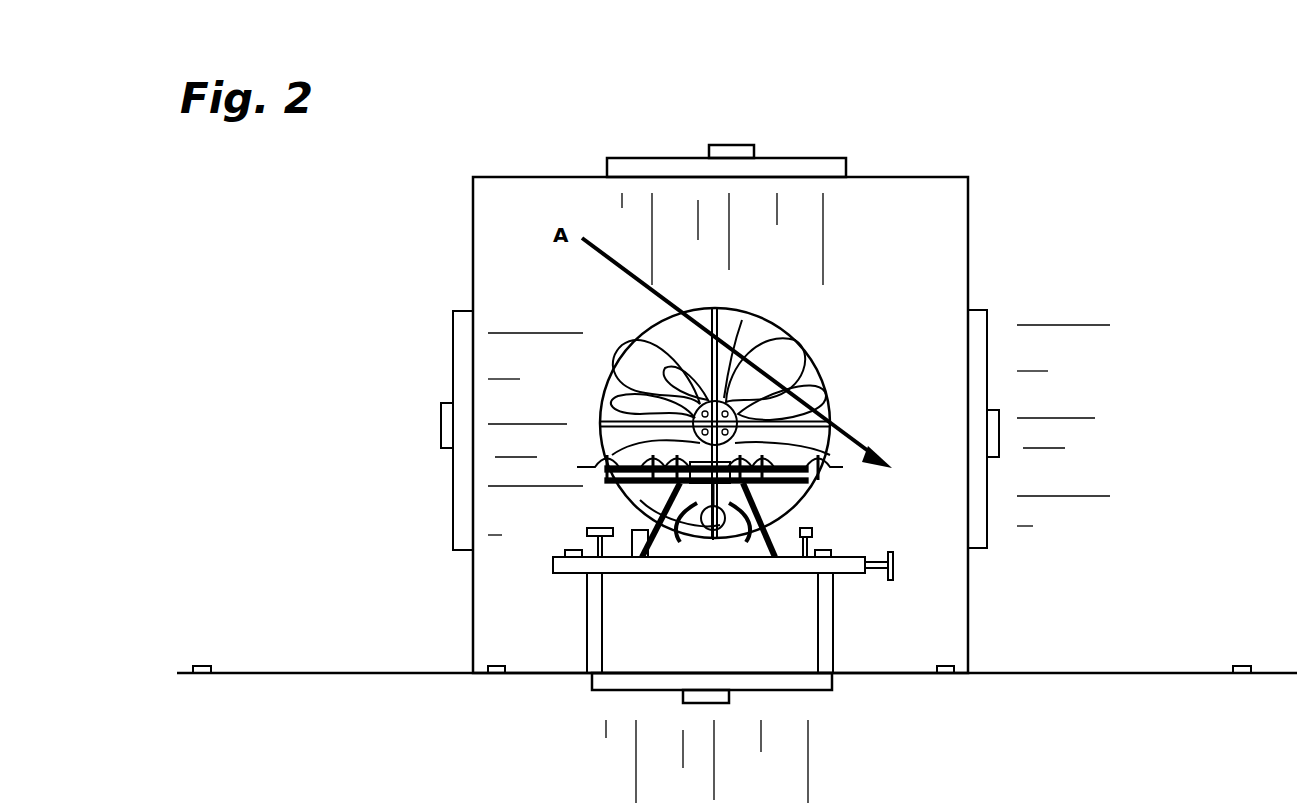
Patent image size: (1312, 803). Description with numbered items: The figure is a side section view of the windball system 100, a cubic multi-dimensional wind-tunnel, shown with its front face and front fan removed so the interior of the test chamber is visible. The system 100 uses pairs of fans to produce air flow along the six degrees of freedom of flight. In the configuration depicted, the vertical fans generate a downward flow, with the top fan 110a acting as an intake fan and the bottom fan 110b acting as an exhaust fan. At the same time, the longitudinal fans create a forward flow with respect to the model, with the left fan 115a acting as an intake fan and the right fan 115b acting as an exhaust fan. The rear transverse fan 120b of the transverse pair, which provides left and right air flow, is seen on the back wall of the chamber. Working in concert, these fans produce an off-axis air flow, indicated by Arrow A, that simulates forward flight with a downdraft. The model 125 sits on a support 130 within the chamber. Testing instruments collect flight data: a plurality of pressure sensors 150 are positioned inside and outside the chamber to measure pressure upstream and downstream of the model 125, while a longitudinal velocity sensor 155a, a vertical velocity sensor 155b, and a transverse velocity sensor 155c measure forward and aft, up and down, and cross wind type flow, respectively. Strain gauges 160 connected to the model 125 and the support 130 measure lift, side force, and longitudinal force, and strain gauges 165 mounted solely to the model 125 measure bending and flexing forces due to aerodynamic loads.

The system 100 is at (486, 136).
The top fan 110a is at (792, 157).
The bottom fan 110b is at (822, 690).
The left fan 115a is at (465, 311).
The right fan 115b is at (980, 310).
The transverse fan 120b is at (643, 347).
The model 125 is at (840, 428).
The support 130 is at (848, 557).
The pressure sensors 150 is at (577, 550).
The longitudinal velocity sensor 155a is at (600, 528).
The vertical velocity sensor 155b is at (892, 578).
The transverse velocity sensor 155c is at (803, 523).
The strain gauges 160 is at (638, 558).
The strain gauges 165 is at (780, 558).